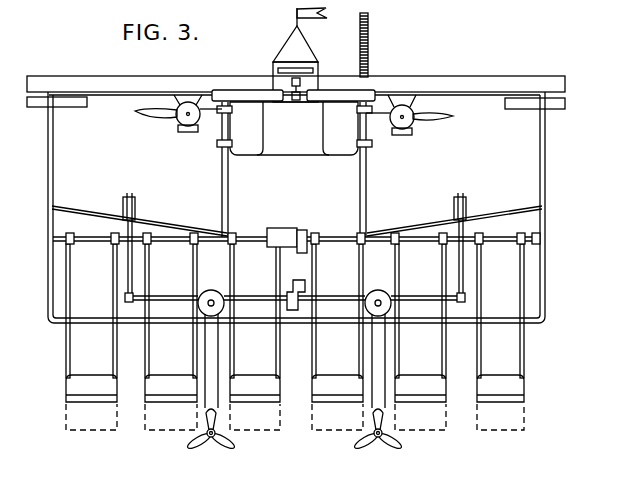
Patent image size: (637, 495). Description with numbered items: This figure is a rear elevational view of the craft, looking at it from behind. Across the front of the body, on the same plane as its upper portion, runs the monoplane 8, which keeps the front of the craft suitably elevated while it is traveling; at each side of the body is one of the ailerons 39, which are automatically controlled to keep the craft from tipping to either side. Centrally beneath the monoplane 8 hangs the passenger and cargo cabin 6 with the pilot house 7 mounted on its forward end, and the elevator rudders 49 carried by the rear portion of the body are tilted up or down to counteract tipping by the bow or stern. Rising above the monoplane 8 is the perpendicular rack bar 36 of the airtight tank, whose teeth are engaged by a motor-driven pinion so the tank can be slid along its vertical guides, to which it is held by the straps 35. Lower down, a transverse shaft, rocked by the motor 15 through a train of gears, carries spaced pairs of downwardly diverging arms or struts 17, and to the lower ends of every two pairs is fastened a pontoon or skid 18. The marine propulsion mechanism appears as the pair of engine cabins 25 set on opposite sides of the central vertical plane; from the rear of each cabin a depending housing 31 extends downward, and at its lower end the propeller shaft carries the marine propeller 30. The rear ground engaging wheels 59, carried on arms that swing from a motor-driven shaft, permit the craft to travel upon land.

The passenger and cargo cabin 6 is at (294, 128).
The pilot house 7 is at (300, 55).
The monoplane 8 is at (467, 78).
The motor 15 is at (286, 230).
The arms or struts 17 is at (192, 342).
The pontoon or skid 18 is at (332, 394).
The engine cabins 25 is at (386, 298).
The marine propeller 30 is at (152, 116).
The depending housing 31 is at (380, 358).
The straps 35 is at (370, 113).
The rack bar 36 is at (369, 43).
The ailerons 39 is at (73, 109).
The elevator rudders 49 is at (317, 101).
The rear ground engaging wheels 59 is at (129, 192).